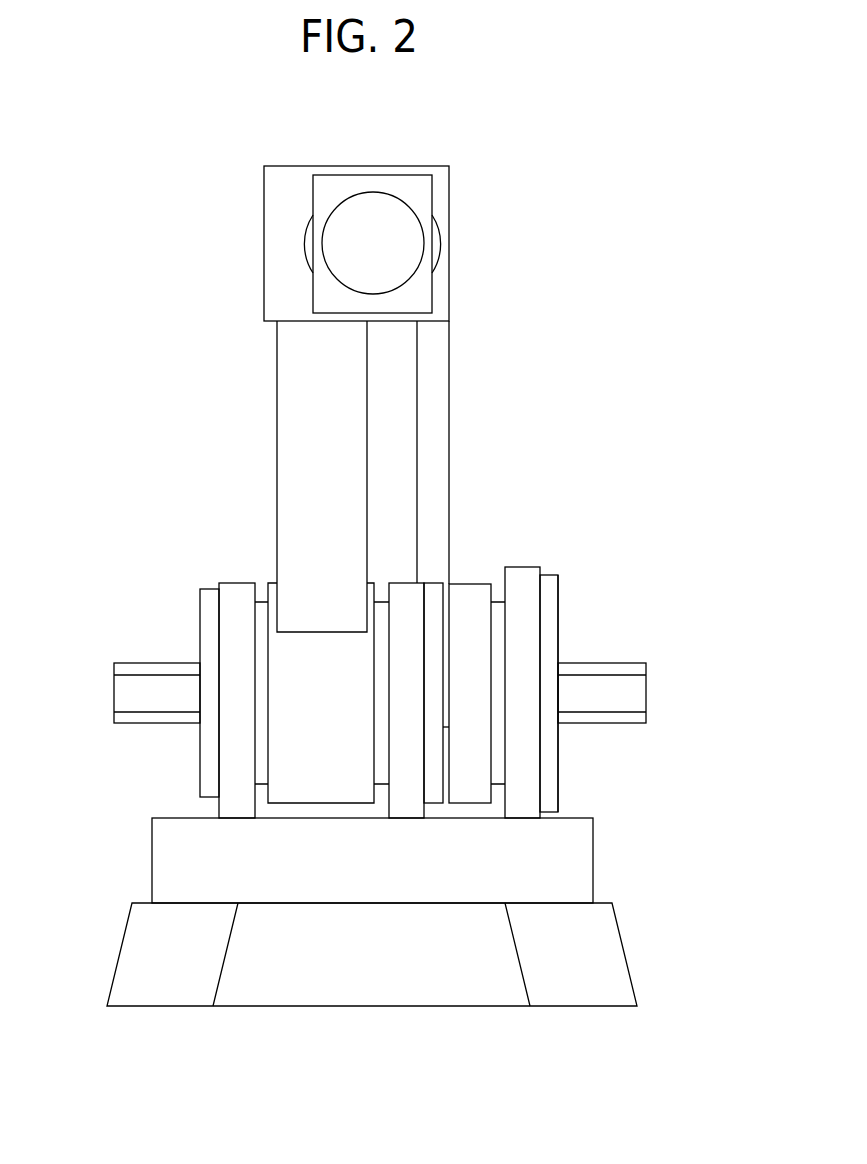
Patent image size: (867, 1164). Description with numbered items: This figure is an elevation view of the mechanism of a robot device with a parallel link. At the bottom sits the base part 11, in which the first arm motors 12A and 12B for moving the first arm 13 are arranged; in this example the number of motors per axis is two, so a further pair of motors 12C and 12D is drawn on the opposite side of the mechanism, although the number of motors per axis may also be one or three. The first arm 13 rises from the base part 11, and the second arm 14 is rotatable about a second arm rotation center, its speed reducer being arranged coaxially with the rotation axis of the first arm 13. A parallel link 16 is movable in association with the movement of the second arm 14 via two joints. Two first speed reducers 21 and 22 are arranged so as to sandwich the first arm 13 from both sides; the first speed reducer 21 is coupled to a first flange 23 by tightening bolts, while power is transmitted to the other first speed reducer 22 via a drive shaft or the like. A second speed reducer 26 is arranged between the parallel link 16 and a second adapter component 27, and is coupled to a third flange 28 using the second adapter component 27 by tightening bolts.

The base part 11 is at (610, 968).
The first arm motor 12A is at (136, 635).
The first arm motor 12B is at (147, 683).
The rotary shaft 12C is at (646, 636).
The rotary shaft 12D is at (595, 683).
The first arm 13 is at (290, 436).
The second arm 14 is at (409, 186).
The parallel link 16 is at (468, 600).
The first speed reducer 21 is at (263, 612).
The first speed reducer 22 is at (381, 608).
The first flange 23 is at (236, 598).
The second speed reducer 26 is at (523, 586).
The second adapter component 27 is at (557, 578).
The third flange 28 is at (548, 584).